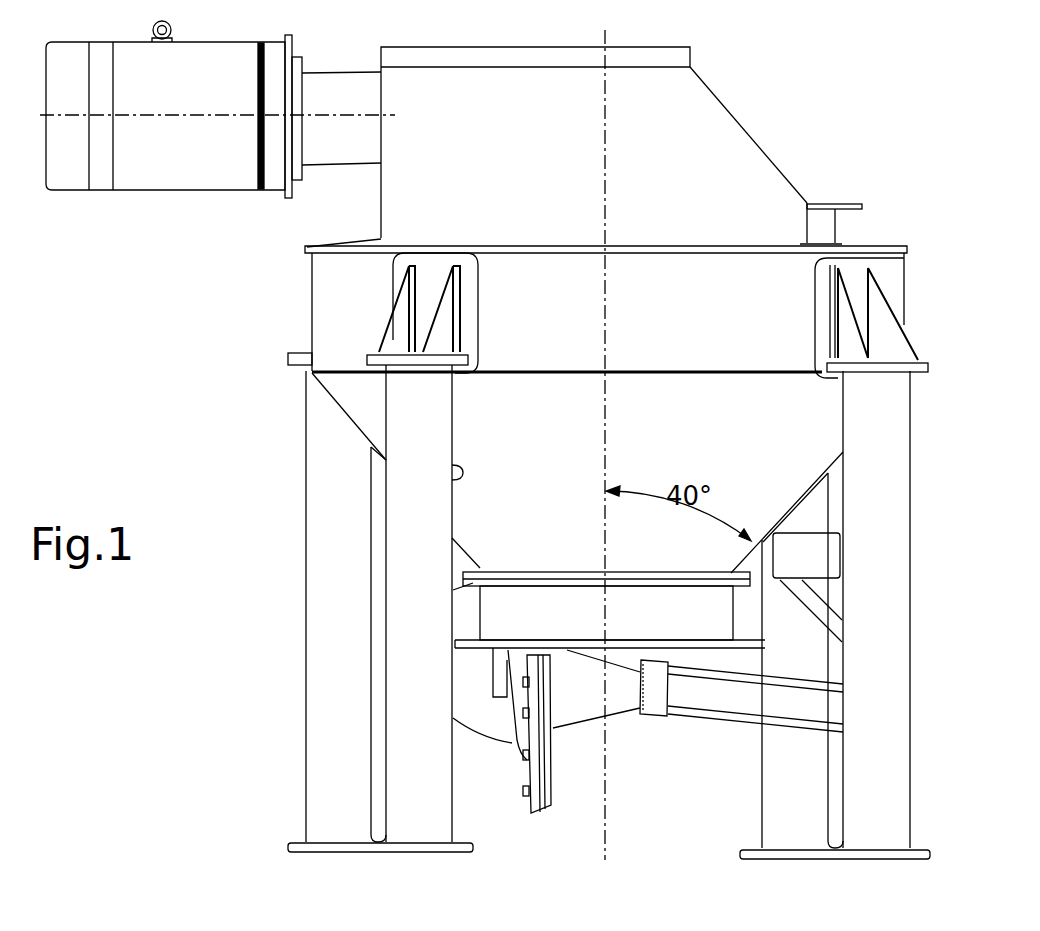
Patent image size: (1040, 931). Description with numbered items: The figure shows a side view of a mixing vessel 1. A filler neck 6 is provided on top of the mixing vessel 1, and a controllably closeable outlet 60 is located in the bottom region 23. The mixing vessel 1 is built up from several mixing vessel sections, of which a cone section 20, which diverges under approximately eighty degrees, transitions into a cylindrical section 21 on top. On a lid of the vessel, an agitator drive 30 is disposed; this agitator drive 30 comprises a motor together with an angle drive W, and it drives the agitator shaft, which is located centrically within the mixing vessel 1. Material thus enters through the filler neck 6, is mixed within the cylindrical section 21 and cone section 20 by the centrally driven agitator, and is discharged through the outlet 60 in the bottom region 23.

The mixing vessel 1 is at (328, 291).
The filler neck 6 is at (837, 207).
The cone section 20 is at (777, 477).
The cylindrical section 21 is at (905, 296).
The bottom region 23 is at (620, 586).
The agitator drive 30 is at (183, 191).
The controllably closeable outlet 60 is at (530, 708).
The angle drive W is at (712, 133).